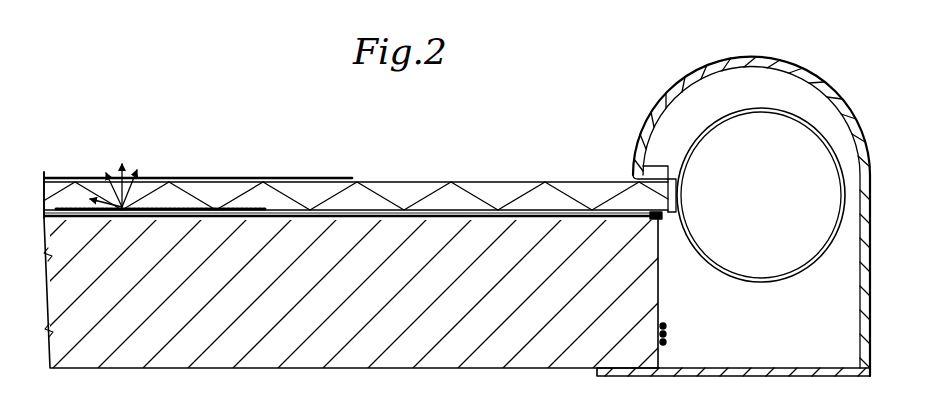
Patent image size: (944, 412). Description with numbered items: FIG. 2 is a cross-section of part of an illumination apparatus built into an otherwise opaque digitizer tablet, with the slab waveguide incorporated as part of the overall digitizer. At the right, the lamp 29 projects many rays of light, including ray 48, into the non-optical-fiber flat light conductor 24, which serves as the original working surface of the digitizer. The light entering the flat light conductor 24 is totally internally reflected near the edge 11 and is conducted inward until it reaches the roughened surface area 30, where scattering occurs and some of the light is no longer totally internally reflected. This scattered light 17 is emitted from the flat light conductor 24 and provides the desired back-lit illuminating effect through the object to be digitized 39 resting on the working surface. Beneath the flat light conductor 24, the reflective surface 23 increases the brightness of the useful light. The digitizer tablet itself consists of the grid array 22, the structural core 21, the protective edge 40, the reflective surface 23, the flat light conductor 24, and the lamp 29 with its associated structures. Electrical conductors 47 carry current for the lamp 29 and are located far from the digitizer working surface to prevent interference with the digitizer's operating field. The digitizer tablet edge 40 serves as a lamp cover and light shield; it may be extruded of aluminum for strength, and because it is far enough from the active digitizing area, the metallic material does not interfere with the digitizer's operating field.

The edge 11 is at (673, 187).
The scattered light 17 is at (125, 198).
The structural core 21 is at (106, 362).
The grid array 22 is at (116, 217).
The reflective surface 23 is at (662, 216).
The non-optical-fiber flat light conductor 24 is at (52, 190).
The lamp 29 is at (770, 105).
The roughened surface area 30 is at (63, 209).
The object to be digitized 39 is at (322, 178).
The protective edge 40 is at (730, 376).
The electrical conductors 47 is at (668, 341).
The ray 48 is at (570, 193).